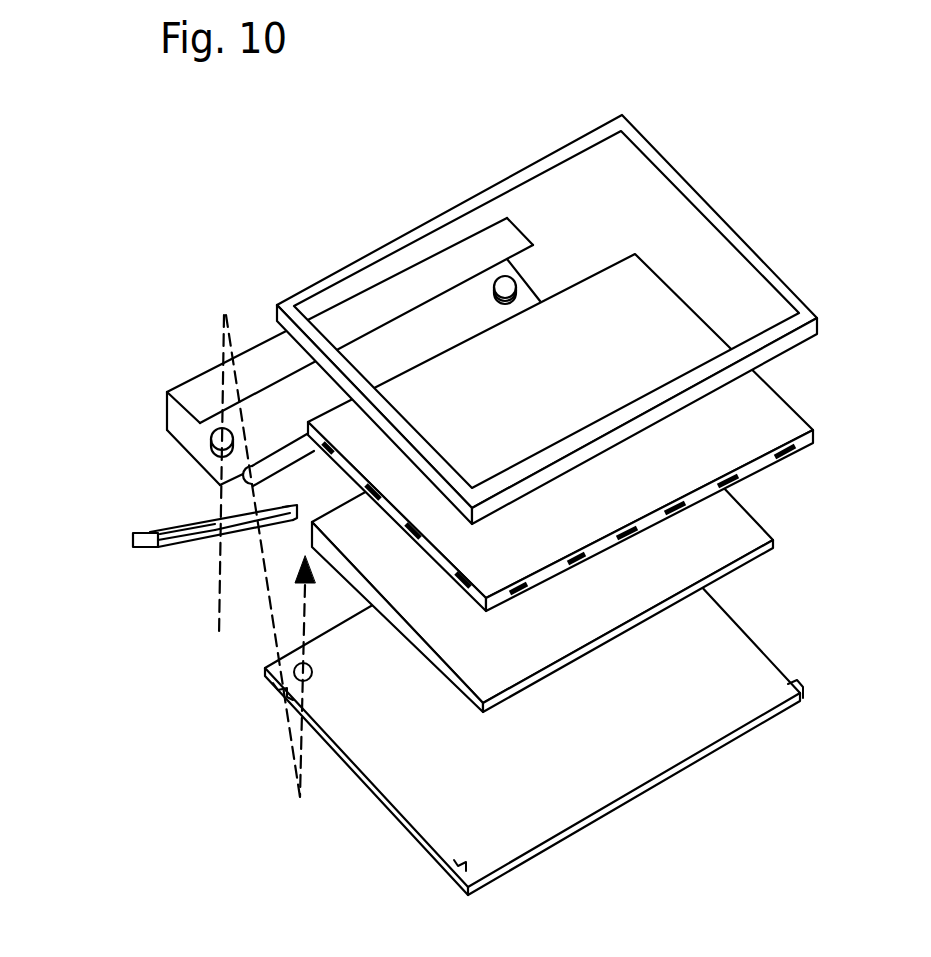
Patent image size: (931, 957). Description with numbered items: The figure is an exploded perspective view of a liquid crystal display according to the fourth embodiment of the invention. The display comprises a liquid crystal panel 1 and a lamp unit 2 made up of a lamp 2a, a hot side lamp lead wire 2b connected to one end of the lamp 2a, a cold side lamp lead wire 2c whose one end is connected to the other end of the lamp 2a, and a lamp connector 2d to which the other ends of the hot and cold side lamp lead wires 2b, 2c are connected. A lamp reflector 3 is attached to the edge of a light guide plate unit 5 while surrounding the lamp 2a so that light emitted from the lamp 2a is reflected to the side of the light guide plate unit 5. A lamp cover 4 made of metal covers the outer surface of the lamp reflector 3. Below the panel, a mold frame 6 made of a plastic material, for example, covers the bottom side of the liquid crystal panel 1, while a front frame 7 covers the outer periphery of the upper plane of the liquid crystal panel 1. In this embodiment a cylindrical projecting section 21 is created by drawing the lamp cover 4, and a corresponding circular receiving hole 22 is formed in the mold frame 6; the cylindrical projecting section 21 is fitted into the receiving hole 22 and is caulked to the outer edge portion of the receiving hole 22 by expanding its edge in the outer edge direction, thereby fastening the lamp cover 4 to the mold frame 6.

The liquid crystal panel 1 is at (768, 400).
The lamp unit 2 is at (178, 552).
The lamp 2a is at (293, 517).
The hot side lamp lead wire 2b is at (182, 548).
The cold side lamp lead wire 2c is at (173, 533).
The lamp connector 2d is at (121, 564).
The lamp reflector 3 is at (217, 480).
The lamp cover 4 is at (277, 347).
The light guide plate unit 5 is at (740, 522).
The mold frame 6 is at (797, 679).
The front frame 7 is at (762, 264).
The cylindrical projecting section 21 is at (498, 277).
The receiving hole 22 is at (293, 675).